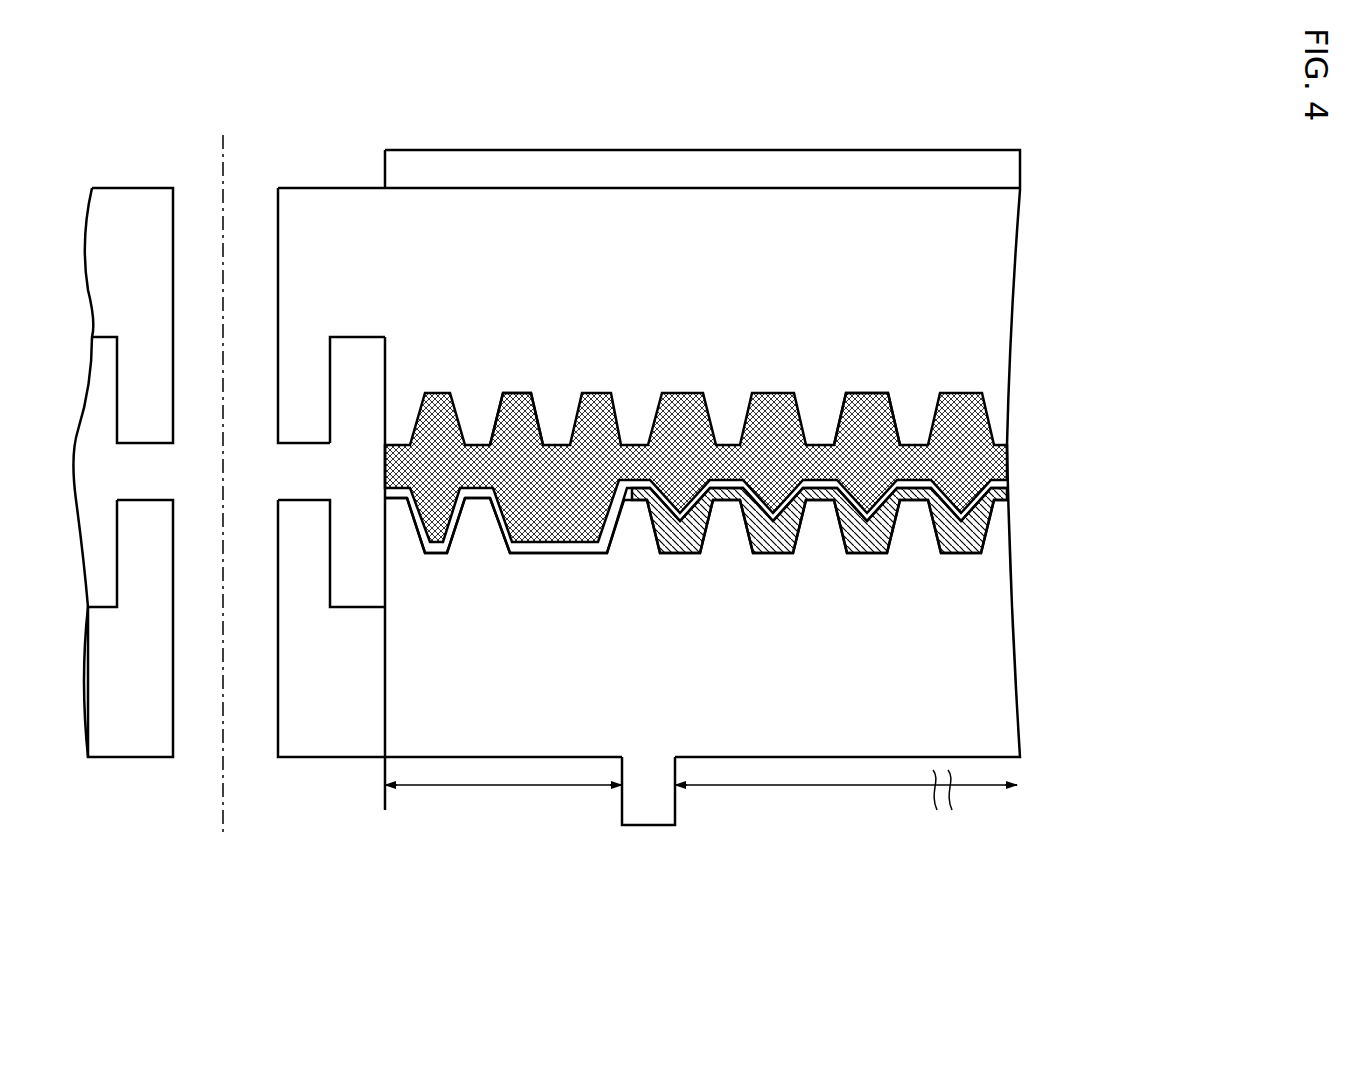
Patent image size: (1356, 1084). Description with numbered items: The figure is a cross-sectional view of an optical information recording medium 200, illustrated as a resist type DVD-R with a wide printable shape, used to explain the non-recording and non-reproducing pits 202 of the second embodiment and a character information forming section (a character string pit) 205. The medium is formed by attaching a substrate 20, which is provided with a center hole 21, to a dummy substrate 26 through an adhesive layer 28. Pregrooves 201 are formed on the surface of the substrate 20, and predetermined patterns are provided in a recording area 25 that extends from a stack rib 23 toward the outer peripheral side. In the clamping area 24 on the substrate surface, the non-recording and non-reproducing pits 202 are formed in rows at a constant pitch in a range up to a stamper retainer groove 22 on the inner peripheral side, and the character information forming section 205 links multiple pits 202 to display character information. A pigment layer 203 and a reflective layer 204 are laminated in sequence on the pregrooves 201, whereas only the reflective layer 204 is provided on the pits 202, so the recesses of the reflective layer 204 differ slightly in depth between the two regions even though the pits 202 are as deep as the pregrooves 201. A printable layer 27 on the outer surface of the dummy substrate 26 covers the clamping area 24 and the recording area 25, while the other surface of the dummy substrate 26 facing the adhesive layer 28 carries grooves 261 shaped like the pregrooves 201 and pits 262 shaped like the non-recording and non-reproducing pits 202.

The optical information recording medium 200 is at (666, 124).
The substrate 20 is at (1003, 722).
The center hole 21 is at (186, 742).
The stamper retainer groove 22 is at (385, 597).
The stack rib 23 is at (650, 826).
The clamping area 24 is at (410, 790).
The recording area 25 is at (812, 790).
The dummy substrate 26 is at (995, 284).
The printable layer 27 is at (1012, 172).
The adhesive layer 28 is at (1007, 432).
The pregroove 201 is at (980, 552).
The non-recording and non-reproducing pit 202 is at (433, 555).
The pigment layer 203 is at (960, 557).
The reflective layer 204 is at (1008, 473).
The character information forming section (character string pit) 205 is at (543, 556).
The groove 261 is at (865, 393).
The pit 262 is at (519, 393).